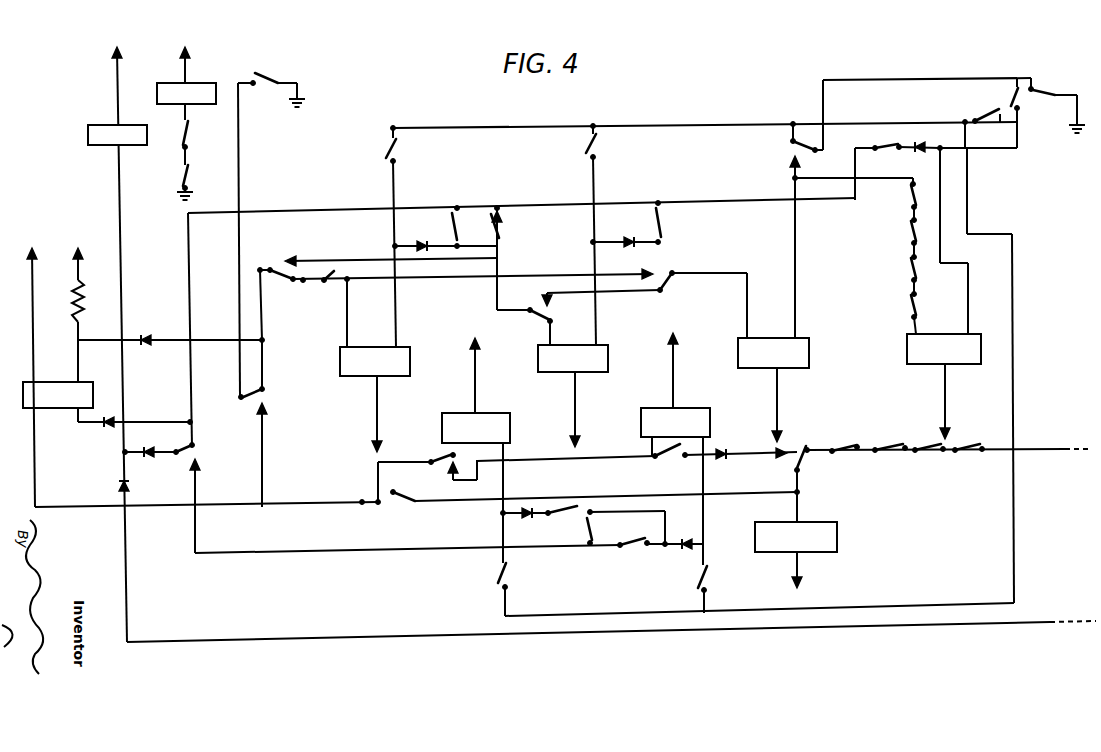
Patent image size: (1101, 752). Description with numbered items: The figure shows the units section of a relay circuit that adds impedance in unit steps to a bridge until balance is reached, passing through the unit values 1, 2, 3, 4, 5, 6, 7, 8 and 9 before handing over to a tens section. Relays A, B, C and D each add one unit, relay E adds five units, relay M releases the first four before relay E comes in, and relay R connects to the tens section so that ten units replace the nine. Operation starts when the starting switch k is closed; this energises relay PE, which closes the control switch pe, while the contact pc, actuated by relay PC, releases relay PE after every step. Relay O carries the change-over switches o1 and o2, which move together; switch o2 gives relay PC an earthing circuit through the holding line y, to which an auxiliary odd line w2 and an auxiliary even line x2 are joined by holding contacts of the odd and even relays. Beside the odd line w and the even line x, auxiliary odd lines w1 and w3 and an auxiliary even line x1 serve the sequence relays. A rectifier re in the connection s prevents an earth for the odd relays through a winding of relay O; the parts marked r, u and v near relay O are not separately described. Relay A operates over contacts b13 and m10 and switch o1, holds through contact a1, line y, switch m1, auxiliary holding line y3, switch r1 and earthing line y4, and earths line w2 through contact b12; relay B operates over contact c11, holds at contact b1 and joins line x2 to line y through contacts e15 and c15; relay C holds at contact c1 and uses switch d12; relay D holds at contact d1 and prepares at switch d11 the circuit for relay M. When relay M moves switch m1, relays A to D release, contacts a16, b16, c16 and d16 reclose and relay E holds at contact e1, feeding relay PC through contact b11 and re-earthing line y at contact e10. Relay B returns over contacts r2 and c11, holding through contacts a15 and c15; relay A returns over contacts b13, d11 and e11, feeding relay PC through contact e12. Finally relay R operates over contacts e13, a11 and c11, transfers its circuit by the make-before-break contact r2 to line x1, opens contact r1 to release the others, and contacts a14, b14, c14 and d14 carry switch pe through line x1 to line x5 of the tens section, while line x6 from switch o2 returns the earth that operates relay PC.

The input line to adder A 1 is at (361, 312).
The output of adder B 2 is at (483, 375).
The input to adder C 3 is at (564, 333).
The output of adder D 4 is at (682, 370).
The input to adder E 5 is at (952, 241).
The line from adder B 6 is at (466, 463).
The output of adder C 7 is at (581, 409).
The line from adder D 8 is at (658, 446).
The output of adder A 9 is at (384, 414).
The relay A is at (375, 365).
The relay B is at (476, 432).
The relay C is at (573, 363).
The relay D is at (675, 427).
The relay E is at (944, 386).
The relay M is at (773, 379).
The relay R is at (796, 548).
The relay O is at (58, 395).
The relay PC is at (117, 344).
The relay PE is at (186, 83).
The resistor r is at (85, 315).
The rectifier re is at (171, 349).
The connection s is at (208, 339).
The line u is at (48, 478).
The line v is at (78, 421).
The odd line w is at (745, 272).
The auxiliary odd line w1 is at (372, 258).
The auxiliary odd line w2 is at (360, 208).
The auxiliary odd line w3 is at (630, 293).
The even line x is at (597, 463).
The auxiliary even line x1 is at (486, 503).
The auxiliary even line x2 is at (358, 554).
The line x5 is at (1040, 452).
The connecting line x6 is at (1050, 620).
The holding line y is at (537, 127).
The auxiliary holding line y3 is at (951, 78).
The earthing line y4 is at (1076, 89).
The starting switch k is at (193, 143).
The contact pc is at (175, 182).
The control switch pe is at (271, 79).
The change-over switch o1 is at (263, 423).
The change-over switch o2 is at (170, 498).
The holding contact a1 is at (379, 237).
The holding contact c1 is at (576, 235).
The switch m1 is at (792, 209).
The holding contact e1 is at (1004, 100).
The switch r1 is at (1057, 105).
The contact e10 is at (978, 128).
The contact b11 is at (898, 161).
The contact a16 is at (896, 200).
The contact b16 is at (896, 237).
The contact c16 is at (896, 274).
The contact d16 is at (896, 313).
The contact b12 is at (426, 228).
The contact e12 is at (479, 226).
The switch d12 is at (626, 224).
The switch d11 is at (555, 311).
The contact e11 is at (702, 304).
The contact b13 is at (282, 304).
The contact m10 is at (335, 269).
The contact c11 is at (416, 474).
The make-before-break contact r2 is at (590, 507).
The holding contact b1 is at (491, 589).
The contact c15 is at (547, 520).
The contact a15 is at (626, 528).
The contact e15 is at (659, 552).
The holding contact d1 is at (691, 589).
The contact a11 is at (725, 464).
The contact e13 is at (784, 484).
The contact a14 is at (845, 460).
The contact b14 is at (890, 439).
The contact c14 is at (929, 460).
The contact d14 is at (973, 439).